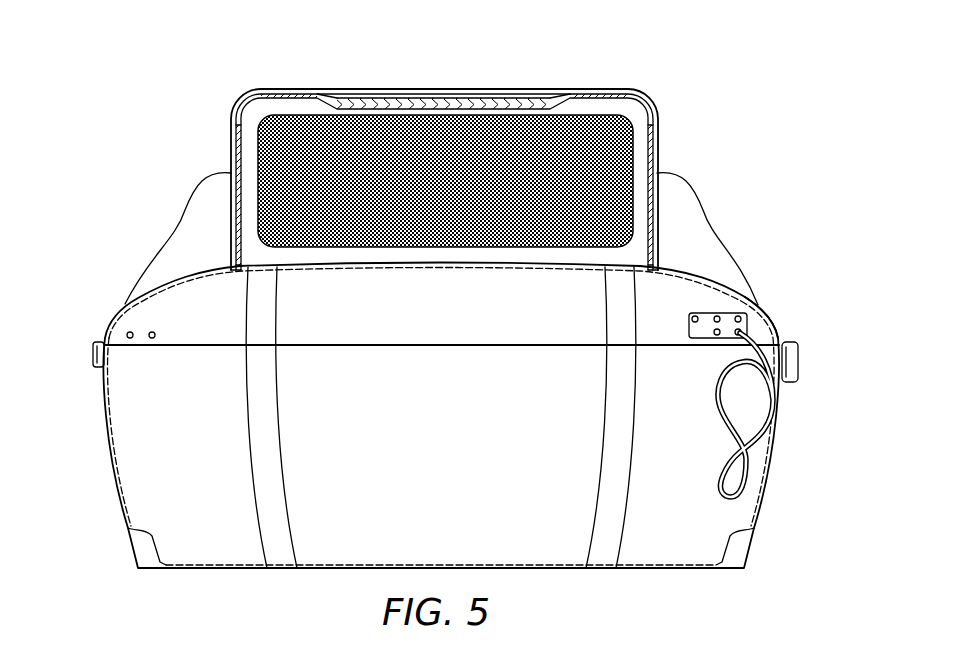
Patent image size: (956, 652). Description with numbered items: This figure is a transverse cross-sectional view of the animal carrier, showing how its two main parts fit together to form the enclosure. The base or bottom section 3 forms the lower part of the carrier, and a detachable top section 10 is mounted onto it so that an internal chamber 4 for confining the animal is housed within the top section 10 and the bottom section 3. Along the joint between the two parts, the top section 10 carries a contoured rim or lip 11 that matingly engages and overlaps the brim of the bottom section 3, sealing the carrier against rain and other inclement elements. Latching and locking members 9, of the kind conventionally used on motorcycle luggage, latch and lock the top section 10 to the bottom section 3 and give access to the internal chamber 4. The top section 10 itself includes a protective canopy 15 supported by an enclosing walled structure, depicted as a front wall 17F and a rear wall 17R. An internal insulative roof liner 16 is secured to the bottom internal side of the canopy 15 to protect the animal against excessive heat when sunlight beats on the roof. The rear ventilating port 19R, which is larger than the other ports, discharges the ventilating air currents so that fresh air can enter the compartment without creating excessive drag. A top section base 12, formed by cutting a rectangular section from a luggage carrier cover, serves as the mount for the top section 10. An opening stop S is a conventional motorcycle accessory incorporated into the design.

The bottom section 3 is at (92, 405).
The internal chamber 4 is at (632, 106).
The latching and locking members 9 is at (797, 355).
The top section 10 is at (609, 85).
The contoured rim or lip 11 is at (102, 338).
The top section base 12 is at (767, 303).
The protective canopy 15 is at (288, 89).
The internal insulative roof liner 16 is at (230, 172).
The rear wall 17R is at (230, 137).
The front wall 17F is at (658, 124).
The rear ventilating port 19R is at (417, 120).
The opening stop S is at (743, 465).